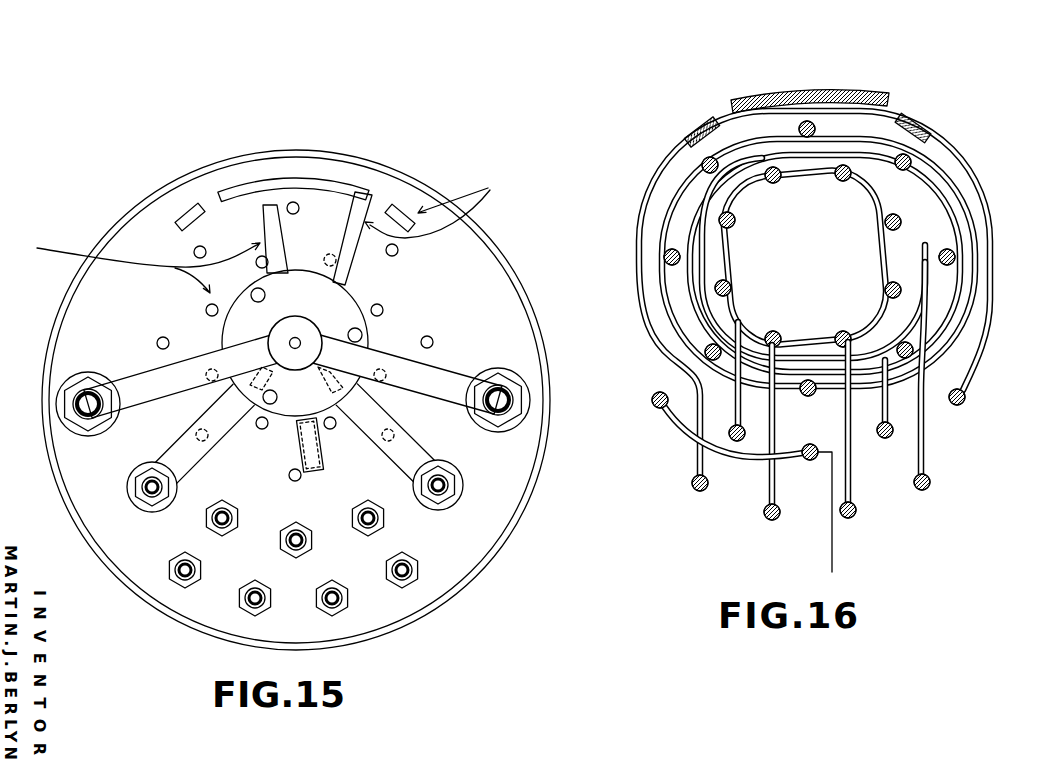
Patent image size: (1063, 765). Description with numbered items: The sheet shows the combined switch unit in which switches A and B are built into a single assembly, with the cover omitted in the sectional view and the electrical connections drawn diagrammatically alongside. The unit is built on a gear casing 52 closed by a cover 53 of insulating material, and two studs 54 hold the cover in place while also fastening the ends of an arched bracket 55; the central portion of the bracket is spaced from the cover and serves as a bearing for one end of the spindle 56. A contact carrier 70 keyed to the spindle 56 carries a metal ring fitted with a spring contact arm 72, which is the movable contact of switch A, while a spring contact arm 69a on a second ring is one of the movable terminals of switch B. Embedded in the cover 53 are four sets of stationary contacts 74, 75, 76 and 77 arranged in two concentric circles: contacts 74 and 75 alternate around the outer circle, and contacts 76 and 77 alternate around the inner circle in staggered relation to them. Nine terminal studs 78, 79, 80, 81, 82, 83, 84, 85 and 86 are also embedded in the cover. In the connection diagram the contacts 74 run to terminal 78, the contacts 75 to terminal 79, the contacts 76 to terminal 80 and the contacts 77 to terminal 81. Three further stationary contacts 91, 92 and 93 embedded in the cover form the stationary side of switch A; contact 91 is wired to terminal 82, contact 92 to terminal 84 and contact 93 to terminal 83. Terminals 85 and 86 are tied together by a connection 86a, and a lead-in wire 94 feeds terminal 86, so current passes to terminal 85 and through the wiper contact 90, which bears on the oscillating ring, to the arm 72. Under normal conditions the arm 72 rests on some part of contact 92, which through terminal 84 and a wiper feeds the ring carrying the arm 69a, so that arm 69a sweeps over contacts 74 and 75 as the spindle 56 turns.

In FIG. 15, the gear casing 52 is at (505, 262).
In FIG. 15, the cover 53 is at (505, 308).
In FIG. 15, the studs 54 is at (90, 410).
In FIG. 15, the bracket 55 is at (386, 352).
In FIG. 15, the spindle 56 is at (297, 340).
In FIG. 15, the spring contact arm 69a is at (292, 239).
In FIG. 15, the contact carrier 70 is at (352, 302).
In FIG. 15, the spring contact arm 72 is at (346, 245).
In FIG. 15, the stationary contacts 74 is at (157, 342).
In FIG. 16, the stationary contacts 74 is at (798, 128).
In FIG. 15, the stationary contacts 75 is at (194, 252).
In FIG. 16, the stationary contacts 75 is at (702, 167).
In FIG. 15, the stationary contacts 76 is at (256, 264).
In FIG. 16, the stationary contacts 76 is at (776, 184).
In FIG. 15, the stationary contacts 77 is at (206, 310).
In FIG. 16, the stationary contacts 77 is at (843, 182).
In FIG. 15, the terminal stud 78 is at (342, 602).
In FIG. 16, the terminal stud 78 is at (855, 514).
In FIG. 15, the terminal stud 79 is at (380, 518).
In FIG. 16, the terminal stud 79 is at (885, 438).
In FIG. 15, the terminal stud 80 is at (232, 517).
In FIG. 16, the terminal stud 80 is at (742, 428).
In FIG. 15, the terminal stud 81 is at (260, 605).
In FIG. 16, the terminal stud 81 is at (772, 521).
In FIG. 15, the terminal stud 82 is at (414, 570).
In FIG. 16, the terminal stud 82 is at (930, 485).
In FIG. 15, the terminal stud 83 is at (187, 578).
In FIG. 16, the terminal stud 83 is at (695, 491).
In FIG. 15, the terminal stud 84 is at (446, 492).
In FIG. 16, the terminal stud 84 is at (964, 401).
In FIG. 15, the terminal stud 85 is at (150, 495).
In FIG. 16, the terminal stud 85 is at (653, 407).
In FIG. 15, the terminal stud 86 is at (306, 543).
In FIG. 16, the terminal stud 86 is at (811, 460).
In FIG. 16, the electrical connection 86a is at (722, 452).
In FIG. 15, the wiper contact 90 is at (190, 468).
In FIG. 15, the stationary contact 91 is at (402, 207).
In FIG. 16, the stationary contact 91 is at (922, 120).
In FIG. 15, the stationary contact 92 is at (292, 185).
In FIG. 16, the stationary contact 92 is at (818, 86).
In FIG. 15, the stationary contact 93 is at (187, 208).
In FIG. 16, the stationary contact 93 is at (702, 120).
In FIG. 16, the lead-in wire 94 is at (832, 558).
In FIG. 15, the switch A is at (432, 206).
In FIG. 15, the switch B is at (137, 263).